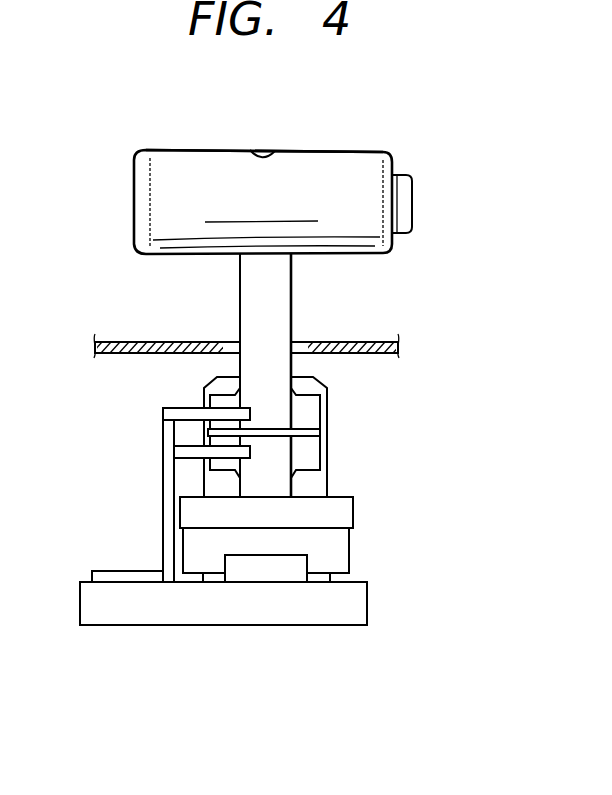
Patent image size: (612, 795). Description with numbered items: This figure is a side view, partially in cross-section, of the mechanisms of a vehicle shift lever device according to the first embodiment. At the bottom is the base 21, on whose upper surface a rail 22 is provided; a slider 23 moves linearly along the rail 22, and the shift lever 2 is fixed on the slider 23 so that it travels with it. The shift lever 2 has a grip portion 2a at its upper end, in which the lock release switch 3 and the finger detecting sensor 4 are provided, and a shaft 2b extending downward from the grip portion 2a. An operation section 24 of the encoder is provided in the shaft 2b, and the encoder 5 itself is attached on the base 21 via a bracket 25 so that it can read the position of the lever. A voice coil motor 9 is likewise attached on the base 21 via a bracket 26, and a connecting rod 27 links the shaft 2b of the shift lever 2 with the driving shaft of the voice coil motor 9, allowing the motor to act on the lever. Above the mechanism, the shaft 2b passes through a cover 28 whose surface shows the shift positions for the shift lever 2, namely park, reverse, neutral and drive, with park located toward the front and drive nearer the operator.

The shift lever 2 is at (384, 152).
The grip portion 2a is at (313, 155).
The shaft 2b is at (292, 290).
The lock release switch 3 is at (413, 191).
The finger detecting sensor 4 is at (260, 147).
The encoder 5 is at (185, 407).
The voice coil motor 9 is at (296, 388).
The base 21 is at (238, 616).
The rail 22 is at (292, 573).
The slider 23 is at (350, 548).
The operation section 24 is at (312, 422).
The bracket 25 is at (163, 472).
The bracket 26 is at (328, 480).
The connecting rod 27 is at (315, 453).
The cover 28 is at (120, 340).